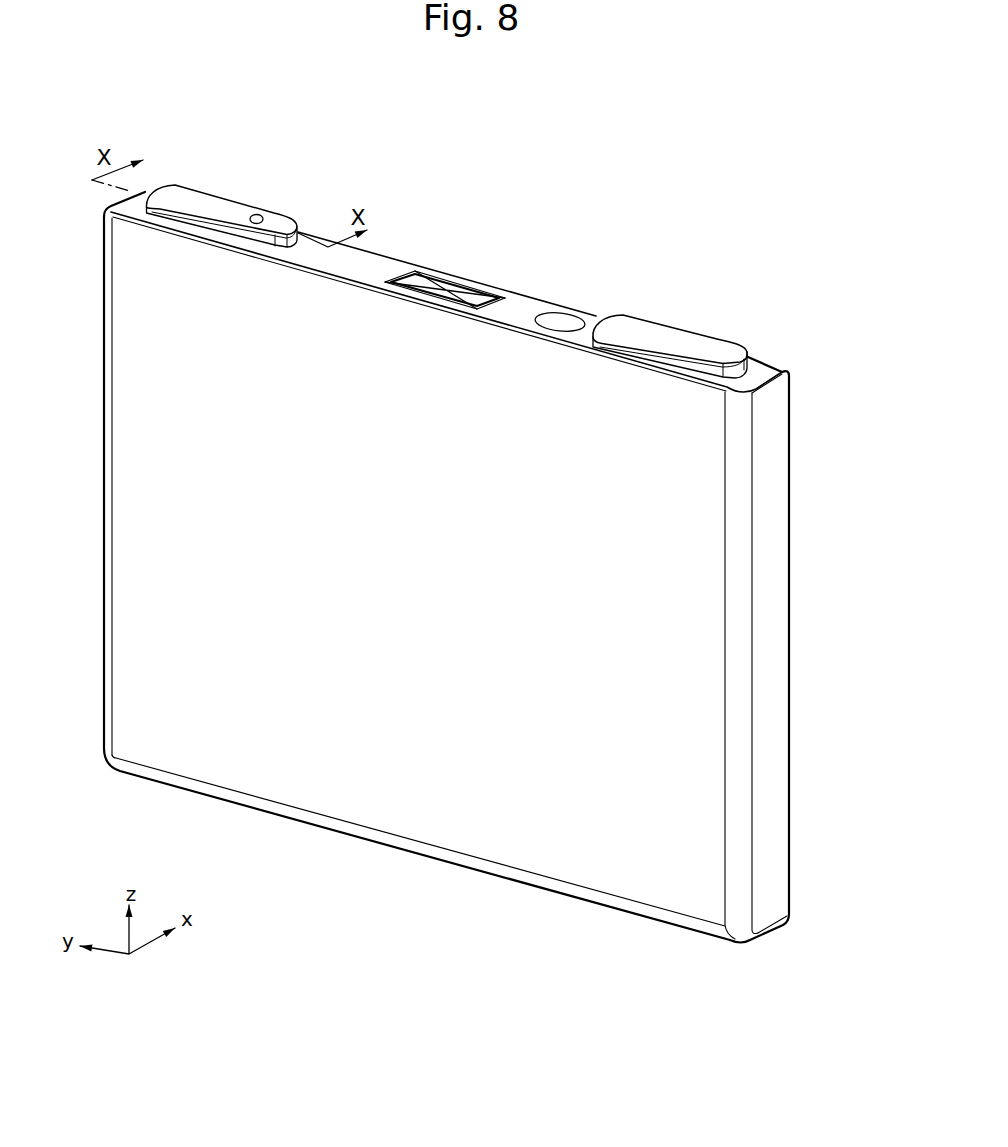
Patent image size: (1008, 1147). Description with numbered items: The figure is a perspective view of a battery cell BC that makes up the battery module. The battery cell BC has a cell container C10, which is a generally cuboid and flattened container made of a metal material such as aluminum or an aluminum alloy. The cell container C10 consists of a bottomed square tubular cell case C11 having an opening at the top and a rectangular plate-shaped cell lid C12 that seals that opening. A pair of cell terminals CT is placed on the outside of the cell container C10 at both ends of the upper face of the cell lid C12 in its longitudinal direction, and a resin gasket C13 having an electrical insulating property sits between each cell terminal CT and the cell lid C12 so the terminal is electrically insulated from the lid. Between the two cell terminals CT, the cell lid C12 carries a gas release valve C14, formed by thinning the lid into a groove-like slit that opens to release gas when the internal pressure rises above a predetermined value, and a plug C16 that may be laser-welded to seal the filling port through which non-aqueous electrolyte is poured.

The battery cell BC is at (740, 192).
The cell terminal CT is at (232, 182).
The cell container C10 is at (888, 299).
The cell case C11 is at (774, 411).
The cell lid C12 is at (762, 371).
The resin gasket C13 is at (185, 226).
The gas release valve C14 is at (458, 282).
The plug C16 is at (554, 318).